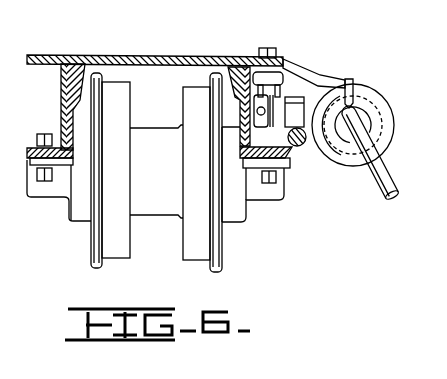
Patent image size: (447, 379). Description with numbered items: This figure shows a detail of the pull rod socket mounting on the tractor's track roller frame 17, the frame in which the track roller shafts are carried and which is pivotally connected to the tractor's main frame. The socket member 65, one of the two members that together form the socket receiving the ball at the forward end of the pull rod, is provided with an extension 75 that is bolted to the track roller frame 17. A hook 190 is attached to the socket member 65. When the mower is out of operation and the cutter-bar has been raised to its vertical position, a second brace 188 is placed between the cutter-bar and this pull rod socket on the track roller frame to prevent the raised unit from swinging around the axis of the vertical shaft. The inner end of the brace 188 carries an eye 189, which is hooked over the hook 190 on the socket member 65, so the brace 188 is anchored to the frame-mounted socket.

The track roller frame 17 is at (246, 57).
The hook 190 is at (289, 97).
The extension 75 is at (312, 78).
The eye 189 is at (330, 80).
The socket member 65 is at (341, 160).
The second brace 188 is at (298, 148).